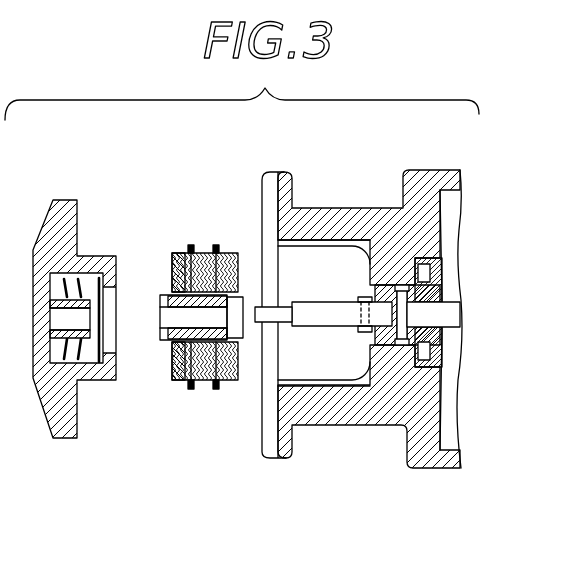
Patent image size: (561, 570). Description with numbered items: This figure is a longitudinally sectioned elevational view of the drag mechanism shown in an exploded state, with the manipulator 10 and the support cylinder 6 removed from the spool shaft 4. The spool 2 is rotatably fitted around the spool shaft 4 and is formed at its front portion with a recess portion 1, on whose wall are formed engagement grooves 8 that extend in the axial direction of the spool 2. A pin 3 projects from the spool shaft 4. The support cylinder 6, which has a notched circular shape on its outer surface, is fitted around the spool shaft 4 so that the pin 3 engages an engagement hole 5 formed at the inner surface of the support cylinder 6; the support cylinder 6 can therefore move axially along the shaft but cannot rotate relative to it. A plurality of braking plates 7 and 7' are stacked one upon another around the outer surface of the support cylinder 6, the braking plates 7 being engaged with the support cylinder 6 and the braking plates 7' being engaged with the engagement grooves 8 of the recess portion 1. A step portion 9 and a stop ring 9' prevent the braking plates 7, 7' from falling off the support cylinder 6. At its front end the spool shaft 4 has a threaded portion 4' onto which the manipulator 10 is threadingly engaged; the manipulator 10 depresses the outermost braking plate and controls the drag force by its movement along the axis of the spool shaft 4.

The recess portion 1 is at (345, 243).
The spool 2 is at (381, 238).
The pin 3 is at (363, 334).
The spool shaft 4 is at (376, 342).
The threaded portion 4' is at (283, 337).
The engagement hole 5 is at (240, 340).
The support cylinder 6 is at (158, 318).
The braking plates 7 is at (203, 399).
The braking plates 7' is at (207, 233).
The engagement grooves 8 is at (306, 214).
The step portion 9 is at (239, 269).
The stop ring 9' is at (192, 258).
The manipulator 10 is at (55, 412).